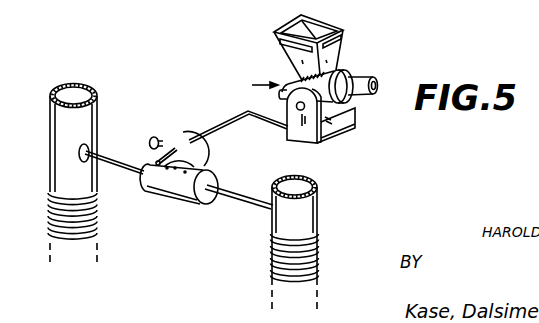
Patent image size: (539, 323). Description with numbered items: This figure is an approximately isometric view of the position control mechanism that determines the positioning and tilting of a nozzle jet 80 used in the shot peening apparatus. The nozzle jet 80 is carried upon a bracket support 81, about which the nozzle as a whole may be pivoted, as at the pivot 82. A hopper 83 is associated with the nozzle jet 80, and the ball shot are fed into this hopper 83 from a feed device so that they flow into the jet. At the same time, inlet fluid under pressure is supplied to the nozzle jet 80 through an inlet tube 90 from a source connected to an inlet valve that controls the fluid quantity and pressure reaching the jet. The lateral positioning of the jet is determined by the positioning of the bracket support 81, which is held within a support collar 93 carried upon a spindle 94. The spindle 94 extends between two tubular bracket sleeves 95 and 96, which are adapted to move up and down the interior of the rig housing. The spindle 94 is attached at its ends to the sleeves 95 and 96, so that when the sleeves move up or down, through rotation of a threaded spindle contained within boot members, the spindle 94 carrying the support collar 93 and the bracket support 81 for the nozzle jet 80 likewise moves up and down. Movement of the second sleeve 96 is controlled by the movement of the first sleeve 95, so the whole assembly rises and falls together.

The nozzle jet 80 is at (367, 78).
The bracket support 81 is at (333, 142).
The pivot 82 is at (298, 109).
The hopper 83 is at (275, 32).
The inlet tube 90 is at (263, 94).
The support collar 93 is at (203, 181).
The spindle 94 is at (231, 197).
The tubular bracket sleeve 95 is at (86, 178).
The tubular bracket sleeve 96 is at (305, 218).